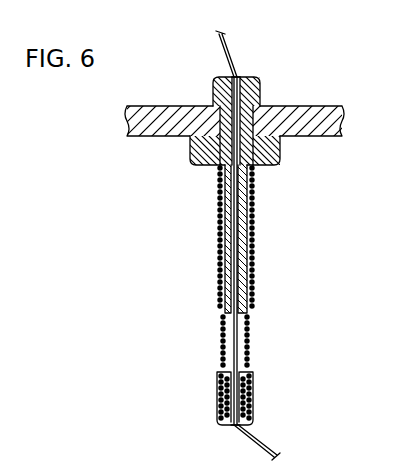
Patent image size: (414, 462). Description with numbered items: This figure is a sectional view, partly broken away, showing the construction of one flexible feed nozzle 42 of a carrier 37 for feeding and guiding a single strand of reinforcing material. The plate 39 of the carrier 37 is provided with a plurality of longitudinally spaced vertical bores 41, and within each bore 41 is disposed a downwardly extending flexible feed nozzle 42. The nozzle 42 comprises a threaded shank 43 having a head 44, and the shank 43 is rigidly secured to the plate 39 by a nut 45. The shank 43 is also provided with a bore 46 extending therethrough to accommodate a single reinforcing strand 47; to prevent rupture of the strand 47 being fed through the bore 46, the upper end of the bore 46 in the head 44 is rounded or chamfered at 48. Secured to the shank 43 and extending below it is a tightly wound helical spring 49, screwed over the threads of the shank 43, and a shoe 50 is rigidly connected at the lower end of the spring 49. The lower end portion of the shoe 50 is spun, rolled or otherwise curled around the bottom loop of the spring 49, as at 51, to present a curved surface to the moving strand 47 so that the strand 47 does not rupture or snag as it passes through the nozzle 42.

The carrier 37 is at (317, 106).
The plate 39 is at (177, 109).
The vertical bore 41 is at (266, 104).
The flexible feed nozzle 42 is at (266, 195).
The threaded shank 43 is at (206, 167).
The head 44 is at (259, 84).
The nut 45 is at (281, 154).
The bore 46 is at (223, 322).
The reinforcing strand 47 is at (229, 58).
The rounded or chamfered upper end 48 is at (243, 76).
The helical spring 49 is at (251, 357).
The shoe 50 is at (254, 392).
The curled lower end portion 51 is at (232, 428).